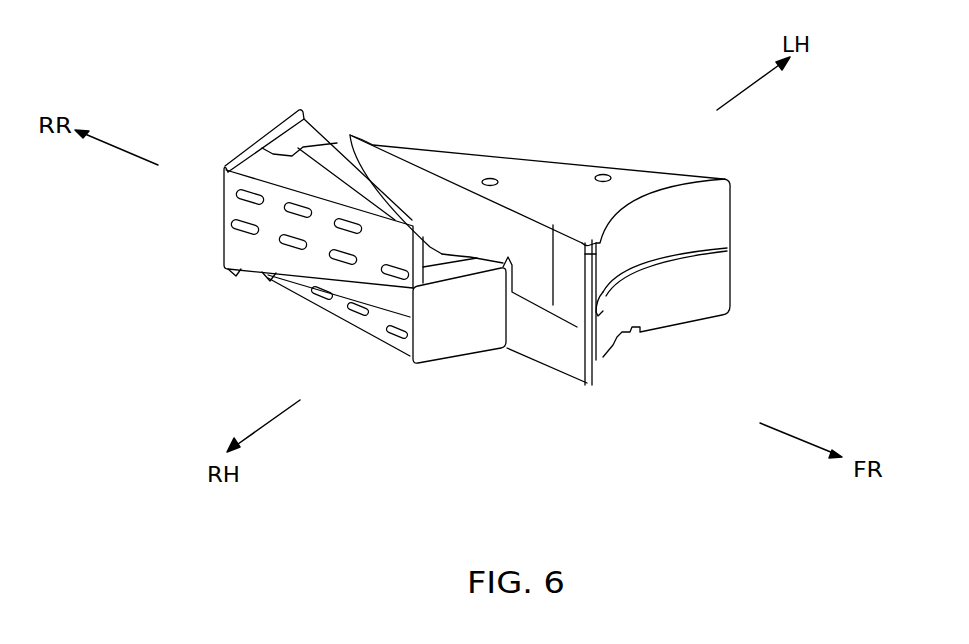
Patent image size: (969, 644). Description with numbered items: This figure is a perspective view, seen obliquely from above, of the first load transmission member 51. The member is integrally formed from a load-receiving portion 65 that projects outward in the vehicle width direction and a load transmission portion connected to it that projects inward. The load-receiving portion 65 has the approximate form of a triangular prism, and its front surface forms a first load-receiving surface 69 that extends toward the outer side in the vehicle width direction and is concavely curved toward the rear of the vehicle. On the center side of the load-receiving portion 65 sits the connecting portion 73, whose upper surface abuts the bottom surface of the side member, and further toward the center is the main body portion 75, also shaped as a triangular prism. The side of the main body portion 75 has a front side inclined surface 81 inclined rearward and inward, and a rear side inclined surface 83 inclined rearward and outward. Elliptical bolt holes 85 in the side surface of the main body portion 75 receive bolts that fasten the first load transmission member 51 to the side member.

The first load transmission member 51 is at (611, 149).
The load-receiving portion 65 is at (553, 183).
The first load-receiving surface 69 is at (700, 228).
The connecting portion 73 is at (433, 250).
The main body portion 75 is at (253, 148).
The front side inclined surface 81 is at (252, 253).
The rear side inclined surface 83 is at (262, 167).
The bolt holes 85 is at (400, 330).